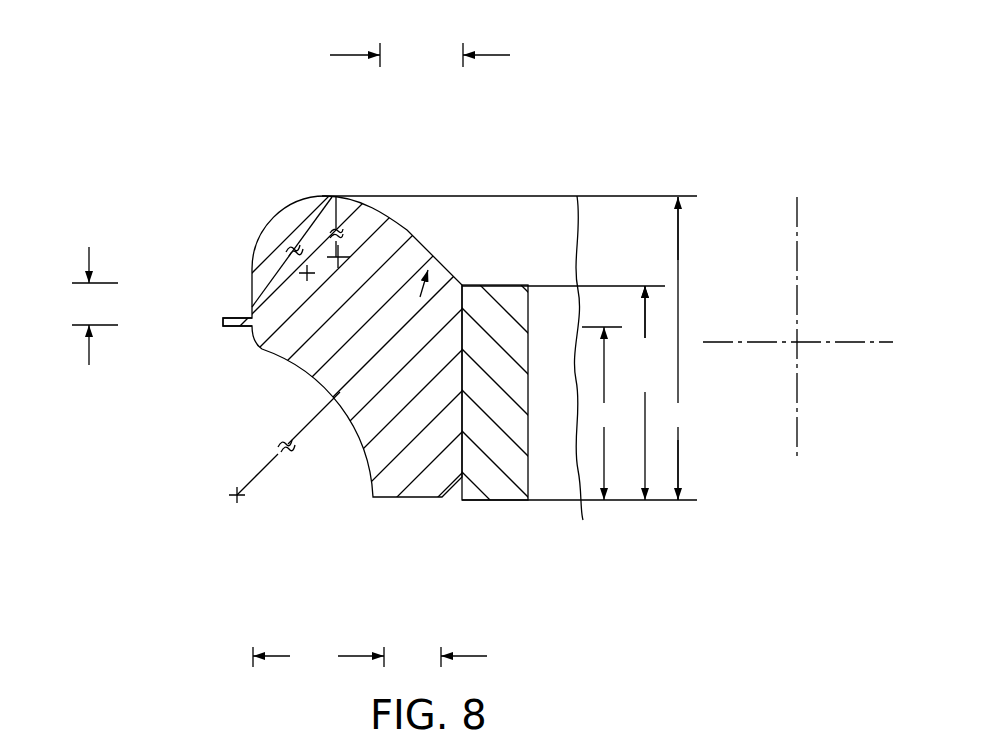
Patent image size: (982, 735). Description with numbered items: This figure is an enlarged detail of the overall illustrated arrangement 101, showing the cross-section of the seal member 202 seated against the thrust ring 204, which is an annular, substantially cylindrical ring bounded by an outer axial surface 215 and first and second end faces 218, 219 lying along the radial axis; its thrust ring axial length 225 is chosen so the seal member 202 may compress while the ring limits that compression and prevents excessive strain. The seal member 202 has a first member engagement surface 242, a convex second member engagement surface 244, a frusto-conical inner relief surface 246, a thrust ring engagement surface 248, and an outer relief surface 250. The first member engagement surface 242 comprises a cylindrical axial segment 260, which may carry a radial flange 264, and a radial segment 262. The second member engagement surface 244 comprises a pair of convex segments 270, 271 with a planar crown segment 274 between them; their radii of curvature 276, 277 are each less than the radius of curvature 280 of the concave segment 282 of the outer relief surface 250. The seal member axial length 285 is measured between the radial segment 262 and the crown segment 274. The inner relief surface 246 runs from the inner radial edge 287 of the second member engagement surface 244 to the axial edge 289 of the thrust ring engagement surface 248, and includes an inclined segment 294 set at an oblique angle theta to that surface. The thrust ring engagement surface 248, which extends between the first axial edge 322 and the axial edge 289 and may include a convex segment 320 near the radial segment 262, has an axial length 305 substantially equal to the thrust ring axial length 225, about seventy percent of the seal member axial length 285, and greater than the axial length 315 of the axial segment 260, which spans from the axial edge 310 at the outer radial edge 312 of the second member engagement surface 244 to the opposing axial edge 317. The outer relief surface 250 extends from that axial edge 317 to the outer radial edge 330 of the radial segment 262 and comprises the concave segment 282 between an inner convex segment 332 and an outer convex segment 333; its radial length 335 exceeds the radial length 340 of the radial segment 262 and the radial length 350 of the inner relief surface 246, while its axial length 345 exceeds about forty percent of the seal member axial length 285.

The turbine engine assembly 101 is at (142, 68).
The seal member 202 is at (281, 343).
The thrust ring 204 is at (549, 313).
The outer axial surface 215 is at (450, 420).
The first end face 218 is at (577, 200).
The second end face 219 is at (490, 500).
The thrust ring axial length 225 is at (651, 393).
The first member engagement surface 242 is at (250, 305).
The second member engagement surface 244 is at (283, 197).
The frusto-conical inner relief surface 246 is at (410, 226).
The thrust ring engagement surface 248 is at (530, 503).
The outer relief surface 250 is at (347, 428).
The axial segment 260 is at (250, 300).
The radial segment 262 is at (428, 499).
The radial flange 264 is at (234, 326).
The convex segment 270 is at (250, 215).
The convex segment 271 is at (255, 248).
The crown segment 274 is at (333, 197).
The radius of curvature 276 is at (307, 273).
The radius of curvature 277 is at (365, 240).
The radius of curvature 280 is at (237, 497).
The concave segment 282 is at (270, 507).
The seal member axial length 285 is at (678, 348).
The inner radial edge 287 is at (390, 197).
The axial edge 289 is at (466, 251).
The inclined segment 294 is at (425, 236).
The thrust ring engagement surface axial length 305 is at (650, 339).
The axial edge 310 is at (251, 283).
The outer radial edge 312 is at (251, 283).
The axial length 315 is at (95, 306).
The axial edge 317 is at (252, 336).
The convex segment 320 is at (443, 499).
The first axial edge 322 is at (452, 500).
The outer radial edge 330 is at (387, 499).
The inner convex segment 332 is at (370, 483).
The outer convex segment 333 is at (275, 356).
The radial length 335 is at (318, 656).
The radial length 340 is at (439, 656).
The axial length 345 is at (603, 413).
The radial length 350 is at (420, 57).